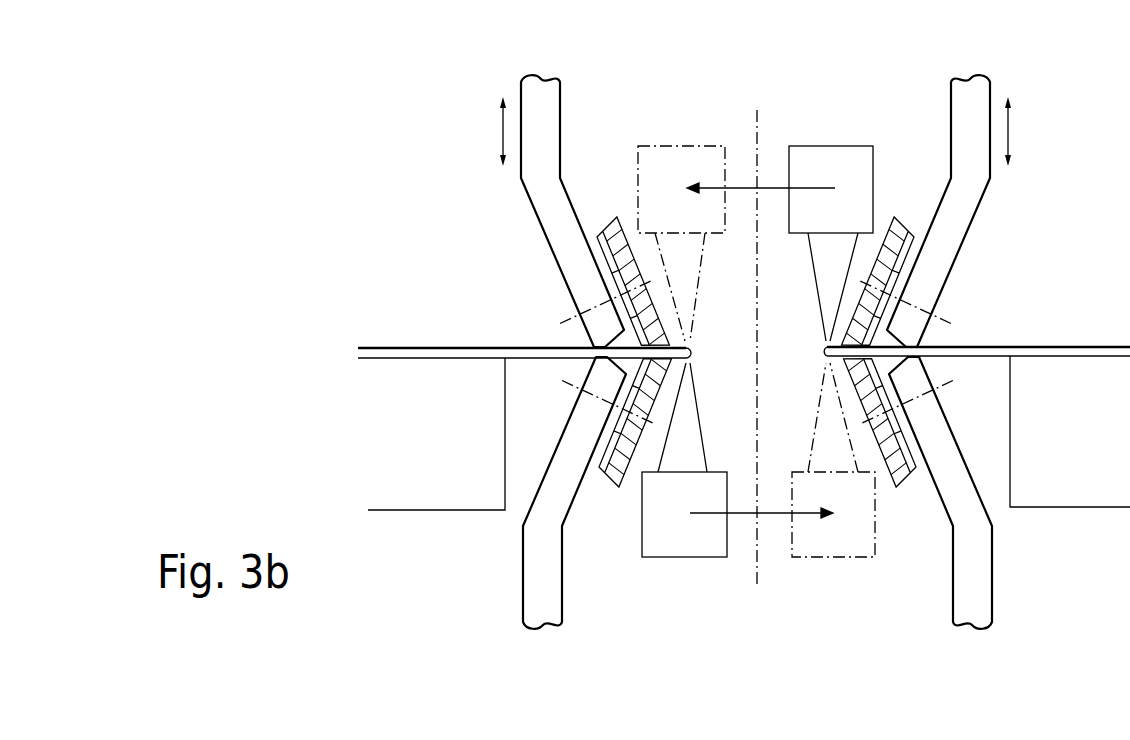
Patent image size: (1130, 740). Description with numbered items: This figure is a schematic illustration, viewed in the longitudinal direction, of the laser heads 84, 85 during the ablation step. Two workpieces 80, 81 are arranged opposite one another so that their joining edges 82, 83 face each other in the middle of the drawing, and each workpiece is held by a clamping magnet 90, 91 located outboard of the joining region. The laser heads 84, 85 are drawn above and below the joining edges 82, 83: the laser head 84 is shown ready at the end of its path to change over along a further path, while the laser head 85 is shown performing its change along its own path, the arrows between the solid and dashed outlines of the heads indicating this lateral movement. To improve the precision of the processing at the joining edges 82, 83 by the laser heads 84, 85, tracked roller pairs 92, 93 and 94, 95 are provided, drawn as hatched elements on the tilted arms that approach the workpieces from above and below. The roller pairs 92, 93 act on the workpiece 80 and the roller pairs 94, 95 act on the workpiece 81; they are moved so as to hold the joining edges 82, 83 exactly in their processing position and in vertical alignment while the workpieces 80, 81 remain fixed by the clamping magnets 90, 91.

The workpiece 80 is at (410, 348).
The workpiece 81 is at (1029, 347).
The joining edge 82 is at (692, 352).
The joining edge 83 is at (823, 352).
The laser head 84 is at (682, 145).
The laser head 85 is at (833, 557).
The clamping magnet 90 is at (428, 477).
The clamping magnet 91 is at (1083, 477).
The tracked roller pair 92 is at (612, 217).
The tracked roller pair 93 is at (608, 480).
The tracked roller pair 94 is at (912, 220).
The tracked roller pair 95 is at (905, 480).